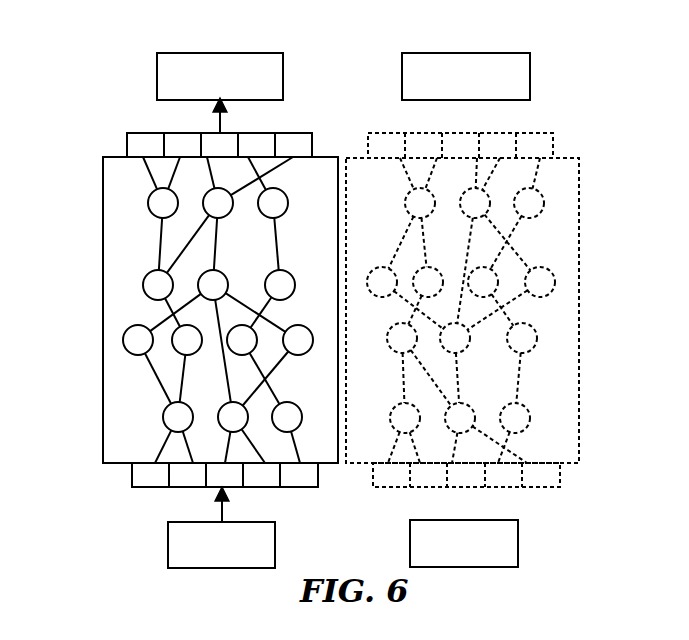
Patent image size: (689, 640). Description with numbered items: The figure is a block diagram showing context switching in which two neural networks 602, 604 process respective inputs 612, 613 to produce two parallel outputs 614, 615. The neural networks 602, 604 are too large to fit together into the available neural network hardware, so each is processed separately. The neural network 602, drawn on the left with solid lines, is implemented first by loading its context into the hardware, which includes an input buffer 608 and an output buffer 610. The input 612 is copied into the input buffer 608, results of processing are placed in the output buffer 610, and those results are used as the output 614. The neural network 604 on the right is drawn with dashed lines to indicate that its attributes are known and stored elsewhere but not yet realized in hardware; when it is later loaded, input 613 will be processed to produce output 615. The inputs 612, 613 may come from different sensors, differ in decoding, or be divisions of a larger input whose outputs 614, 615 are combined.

The neural network 602 is at (103, 217).
The neural network 604 is at (595, 44).
The input buffer 608 is at (130, 476).
The output buffer 610 is at (127, 139).
The input 612 is at (168, 546).
The input 613 is at (519, 543).
The output 614 is at (157, 76).
The output 615 is at (531, 75).